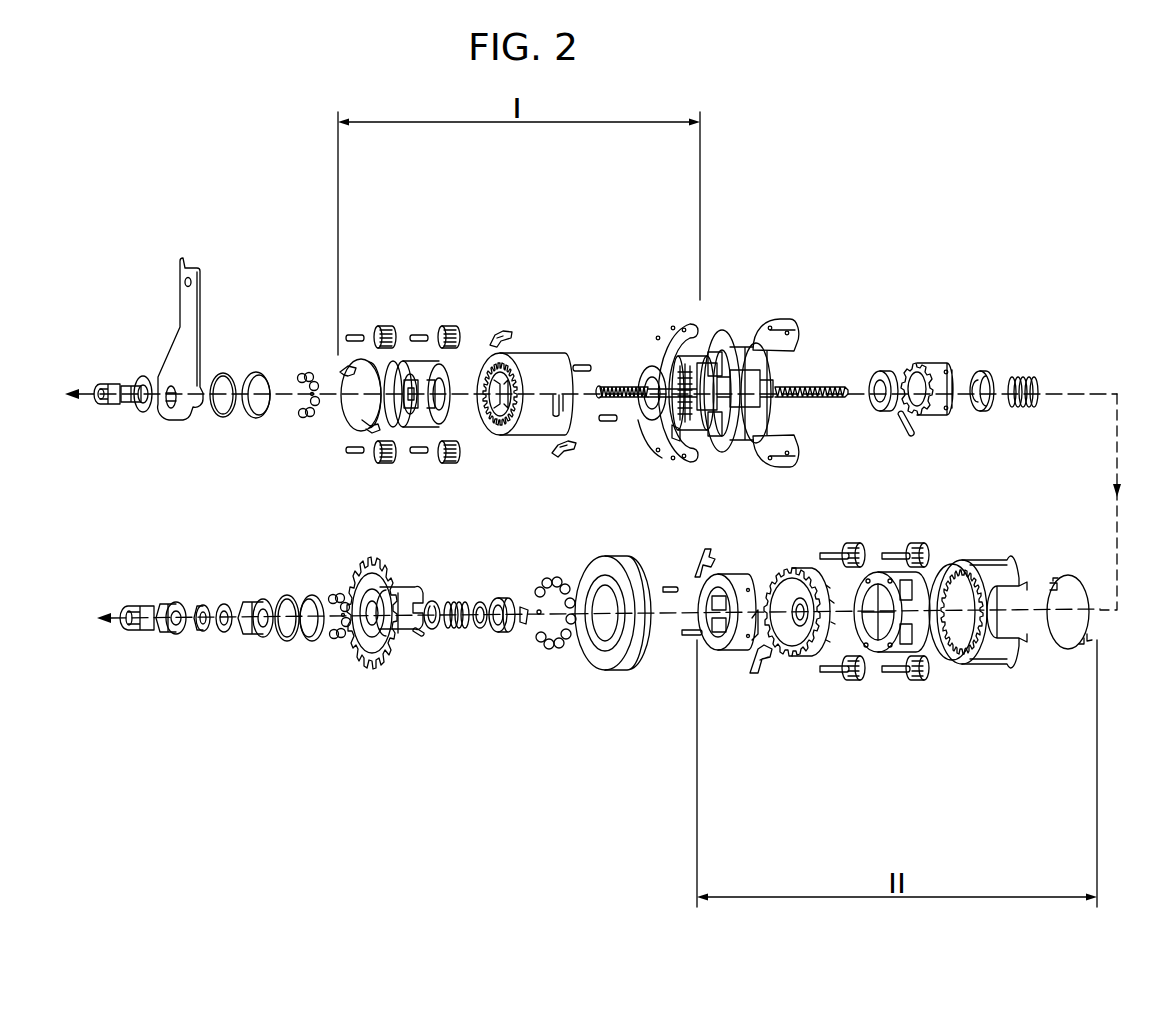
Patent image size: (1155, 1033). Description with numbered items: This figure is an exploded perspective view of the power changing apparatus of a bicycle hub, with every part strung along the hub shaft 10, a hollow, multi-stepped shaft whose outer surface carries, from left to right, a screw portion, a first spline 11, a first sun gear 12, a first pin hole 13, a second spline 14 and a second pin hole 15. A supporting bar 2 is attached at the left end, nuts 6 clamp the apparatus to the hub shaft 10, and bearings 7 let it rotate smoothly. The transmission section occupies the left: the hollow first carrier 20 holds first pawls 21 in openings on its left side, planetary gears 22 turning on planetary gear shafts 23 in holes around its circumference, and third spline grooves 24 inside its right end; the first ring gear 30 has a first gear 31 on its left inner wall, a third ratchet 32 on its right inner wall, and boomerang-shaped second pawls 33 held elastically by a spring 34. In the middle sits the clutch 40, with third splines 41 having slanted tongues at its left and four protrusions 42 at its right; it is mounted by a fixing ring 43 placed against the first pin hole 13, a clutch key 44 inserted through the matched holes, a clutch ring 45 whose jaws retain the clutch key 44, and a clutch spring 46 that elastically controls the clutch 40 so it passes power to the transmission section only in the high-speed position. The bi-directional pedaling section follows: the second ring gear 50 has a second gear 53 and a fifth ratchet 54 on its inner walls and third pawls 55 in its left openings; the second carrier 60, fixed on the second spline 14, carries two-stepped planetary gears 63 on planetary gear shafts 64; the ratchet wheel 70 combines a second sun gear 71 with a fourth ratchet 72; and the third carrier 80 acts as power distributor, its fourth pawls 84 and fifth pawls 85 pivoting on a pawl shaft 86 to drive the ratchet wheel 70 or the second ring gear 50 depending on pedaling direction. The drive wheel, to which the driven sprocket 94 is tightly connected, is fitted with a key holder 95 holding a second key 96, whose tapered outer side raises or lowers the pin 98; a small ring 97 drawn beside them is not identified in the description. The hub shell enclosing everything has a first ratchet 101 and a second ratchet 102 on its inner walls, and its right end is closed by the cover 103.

The supporting bar 2 is at (191, 307).
The nuts 6 is at (140, 386).
The bearings 7 is at (300, 388).
The hub shaft 10 is at (812, 353).
The first spline 11 is at (644, 446).
The first sun gear 12 is at (656, 325).
The first pin hole 13 is at (724, 340).
The second spline 14 is at (766, 448).
The second pin hole 15 is at (766, 345).
The first carrier 20 is at (710, 520).
The first pawls 21 is at (344, 372).
The planetary gears 22 is at (396, 332).
The planetary gear shaft 23 is at (363, 334).
The third spline grooves 24 is at (452, 380).
The first ring gear 30 is at (546, 396).
The first gear 31 is at (493, 435).
The third ratchet 32 is at (587, 425).
The second pawls 33 is at (566, 452).
The spring 34 is at (497, 348).
The clutch 40 is at (963, 374).
The third splines 41 is at (906, 363).
The protrusions 42 is at (950, 412).
The fixing ring 43 is at (878, 412).
The clutch key 44 is at (910, 440).
The clutch ring 45 is at (984, 373).
The clutch spring 46 is at (1036, 380).
The second ring gear 50 is at (982, 665).
The second gear 53 is at (960, 655).
The fifth ratchet 54 is at (962, 578).
The third pawls 55 is at (1088, 650).
The second carrier 60 is at (873, 700).
The two-stepped planetary gears 63 is at (853, 683).
The planetary gear shaft 64 is at (838, 668).
The ratchet wheel 70 is at (796, 723).
The second sun gear 71 is at (815, 652).
The fourth ratchet 72 is at (782, 654).
The third carrier 80 is at (714, 718).
The fourth pawls 84 is at (757, 667).
The fifth pawls 85 is at (752, 672).
The pawl shaft 86 is at (684, 638).
The driven sprocket 94 is at (371, 665).
The key holder 95 is at (458, 640).
The second key 96 is at (525, 640).
The snap ring 97 is at (433, 640).
The pin 98 is at (415, 637).
The first ratchet 101 is at (681, 442).
The second ratchet 102 is at (721, 432).
The cover 103 is at (610, 662).